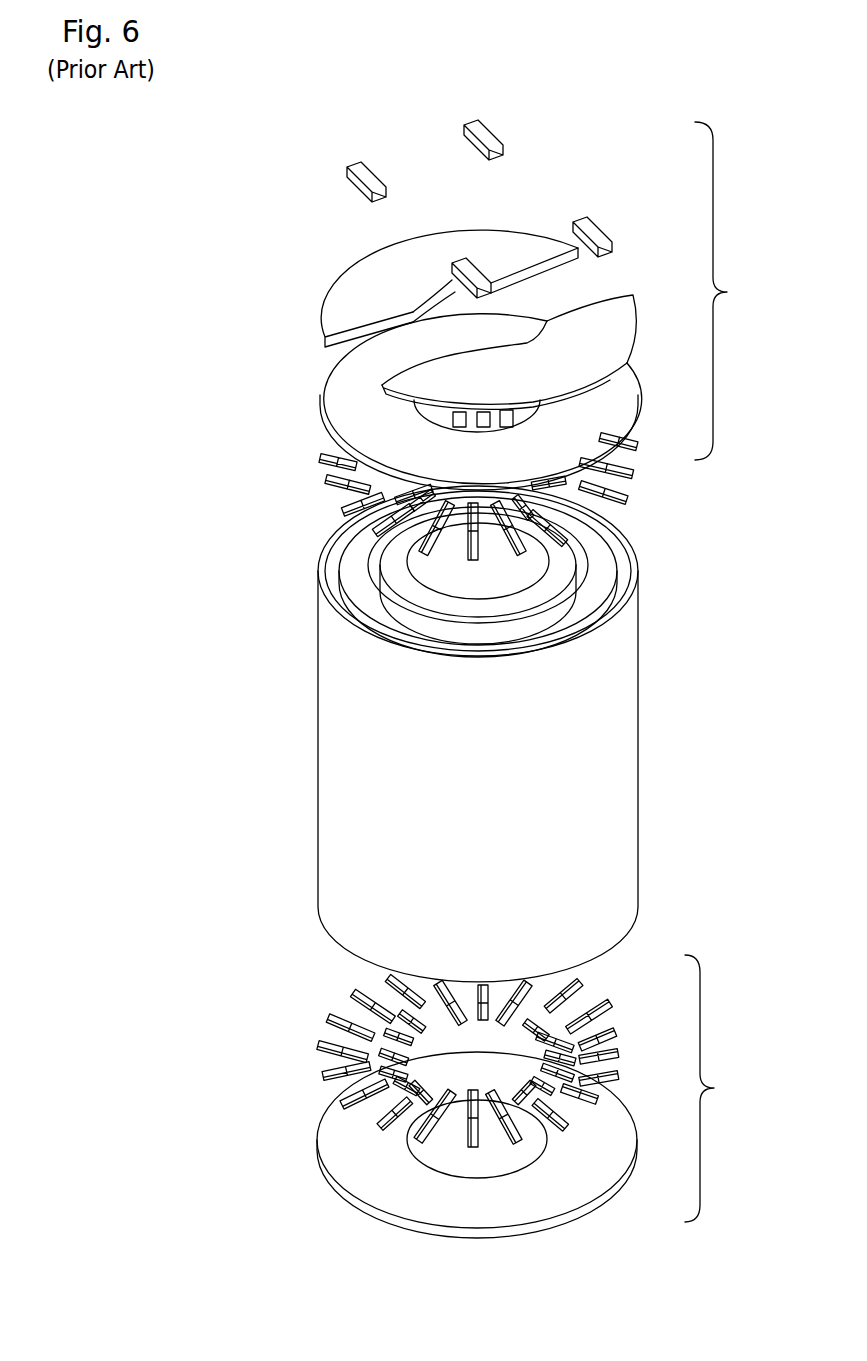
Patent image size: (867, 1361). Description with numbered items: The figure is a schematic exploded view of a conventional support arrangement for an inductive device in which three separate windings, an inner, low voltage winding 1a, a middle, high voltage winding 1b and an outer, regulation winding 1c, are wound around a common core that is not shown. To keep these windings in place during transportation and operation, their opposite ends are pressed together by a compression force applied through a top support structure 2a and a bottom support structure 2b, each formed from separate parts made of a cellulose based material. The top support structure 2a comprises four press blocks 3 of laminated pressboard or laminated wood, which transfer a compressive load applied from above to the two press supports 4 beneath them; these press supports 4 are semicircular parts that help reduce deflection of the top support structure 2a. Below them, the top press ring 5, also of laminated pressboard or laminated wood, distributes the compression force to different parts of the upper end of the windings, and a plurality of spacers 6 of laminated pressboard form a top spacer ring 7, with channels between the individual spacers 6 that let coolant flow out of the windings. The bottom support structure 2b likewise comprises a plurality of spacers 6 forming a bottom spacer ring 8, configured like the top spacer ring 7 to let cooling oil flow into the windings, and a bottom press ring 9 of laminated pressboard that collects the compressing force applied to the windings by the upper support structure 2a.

The inner low voltage winding 1a is at (560, 547).
The middle high voltage winding 1b is at (590, 597).
The outer regulation winding 1c is at (617, 693).
The top support structure 2a is at (735, 291).
The bottom support structure 2b is at (728, 1088).
The press block 3 is at (345, 175).
The press support 4 is at (342, 292).
The top press ring 5 is at (333, 388).
The spacer 6 is at (343, 508).
The top spacer ring 7 is at (252, 443).
The bottom spacer ring 8 is at (285, 975).
The bottom press ring 9 is at (330, 1134).